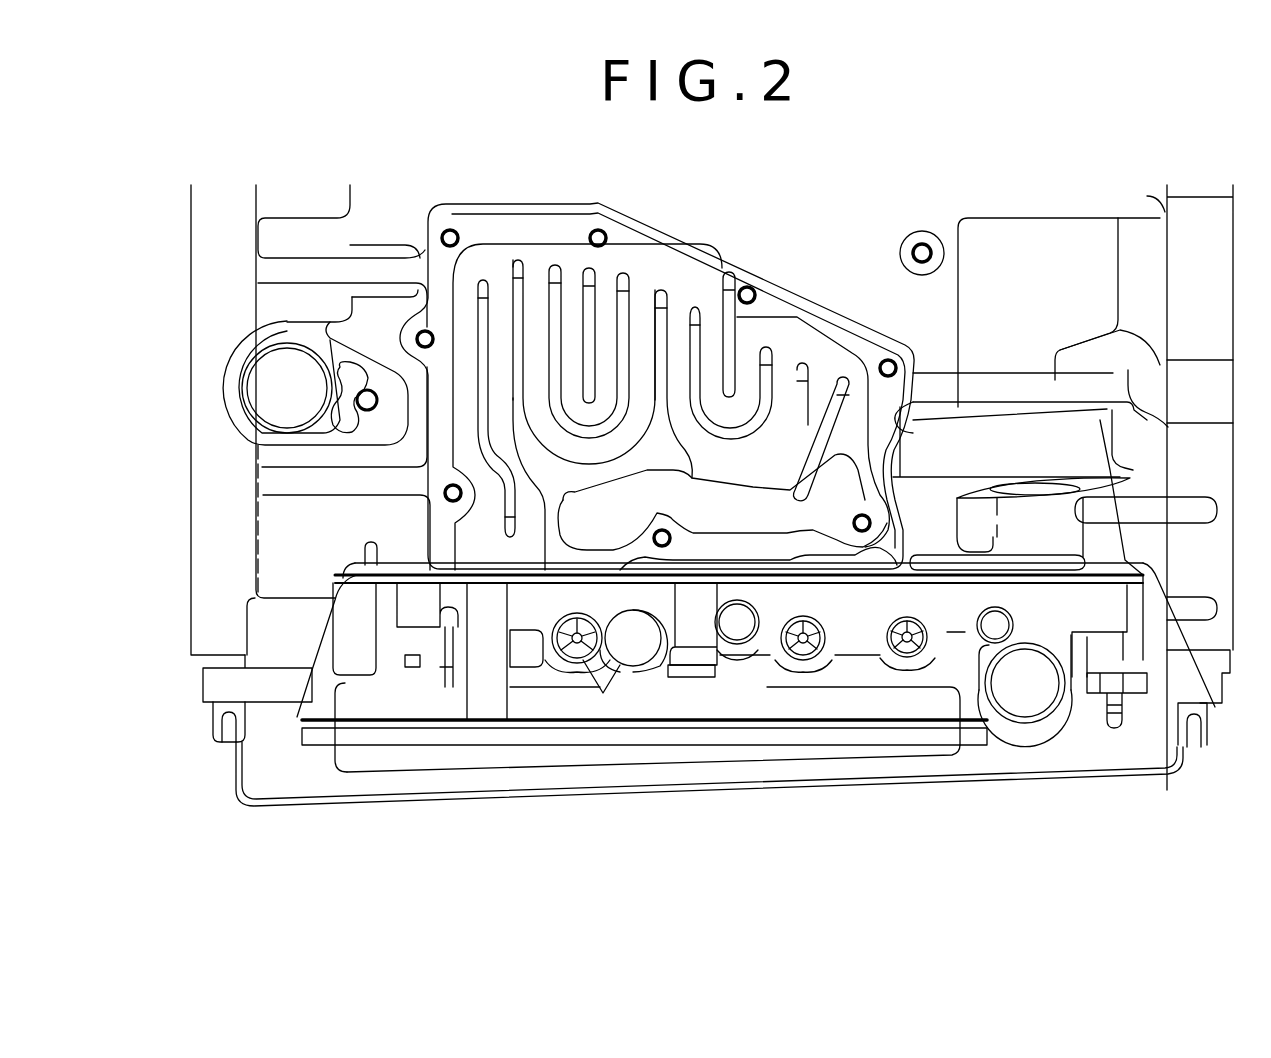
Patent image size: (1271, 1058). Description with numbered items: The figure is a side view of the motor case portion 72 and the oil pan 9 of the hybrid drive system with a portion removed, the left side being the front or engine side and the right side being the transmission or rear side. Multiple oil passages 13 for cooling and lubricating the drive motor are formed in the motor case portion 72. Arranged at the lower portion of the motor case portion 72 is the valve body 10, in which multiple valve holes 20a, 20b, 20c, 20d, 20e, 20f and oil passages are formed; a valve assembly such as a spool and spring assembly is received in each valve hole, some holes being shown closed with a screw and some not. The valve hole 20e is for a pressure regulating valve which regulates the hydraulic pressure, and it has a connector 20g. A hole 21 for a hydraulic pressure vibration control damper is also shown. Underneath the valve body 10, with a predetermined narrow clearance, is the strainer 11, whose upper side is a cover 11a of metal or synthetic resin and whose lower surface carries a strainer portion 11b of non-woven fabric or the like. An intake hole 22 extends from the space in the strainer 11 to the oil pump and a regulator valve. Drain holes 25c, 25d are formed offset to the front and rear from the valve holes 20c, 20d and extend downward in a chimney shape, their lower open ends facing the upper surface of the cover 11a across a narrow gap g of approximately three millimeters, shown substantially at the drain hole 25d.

The oil pan 9 is at (320, 806).
The valve body 10 is at (905, 598).
The strainer 11 is at (918, 757).
The cover 11a is at (833, 765).
The strainer portion 11b is at (740, 750).
The oil passages 13 is at (517, 262).
The valve hole 20a is at (1010, 616).
The valve hole 20b is at (912, 620).
The valve hole 20c is at (825, 626).
The valve hole 20d is at (750, 612).
The valve hole 20e is at (640, 614).
The valve hole 20f is at (566, 630).
The connector 20g is at (603, 690).
The hole 21 is at (1050, 700).
The intake hole 22 is at (487, 652).
The drain hole 25c is at (860, 688).
The drain hole 25d is at (680, 680).
The motor case portion 72 is at (657, 386).
The gap g is at (698, 695).